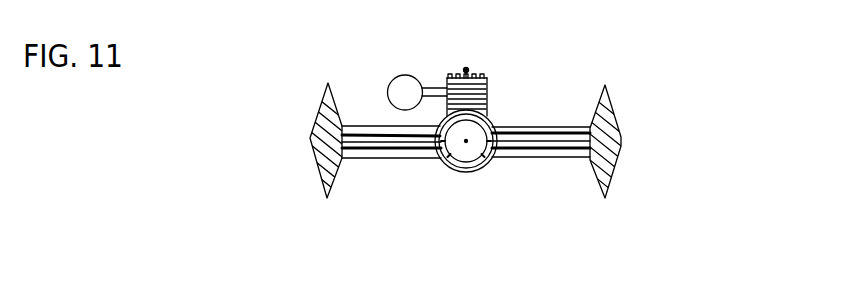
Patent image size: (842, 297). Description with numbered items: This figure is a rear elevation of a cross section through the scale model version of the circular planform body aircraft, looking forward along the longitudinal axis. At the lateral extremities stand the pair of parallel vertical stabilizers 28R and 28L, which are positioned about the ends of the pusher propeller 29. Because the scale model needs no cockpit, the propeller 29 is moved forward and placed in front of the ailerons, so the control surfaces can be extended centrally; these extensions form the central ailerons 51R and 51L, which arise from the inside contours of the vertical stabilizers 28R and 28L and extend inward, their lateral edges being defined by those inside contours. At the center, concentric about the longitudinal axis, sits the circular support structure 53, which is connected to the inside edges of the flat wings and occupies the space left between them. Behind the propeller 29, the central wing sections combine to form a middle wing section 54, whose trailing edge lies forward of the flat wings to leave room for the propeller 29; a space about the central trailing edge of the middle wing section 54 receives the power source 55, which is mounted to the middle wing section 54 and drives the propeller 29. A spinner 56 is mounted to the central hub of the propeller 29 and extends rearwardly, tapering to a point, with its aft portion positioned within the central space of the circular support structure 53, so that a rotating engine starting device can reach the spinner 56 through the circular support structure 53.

The vertical stabilizer 28L is at (312, 163).
The vertical stabilizer 28R is at (610, 103).
The pusher propeller 29 is at (397, 132).
The central aileron 51L is at (402, 143).
The central aileron 51R is at (548, 140).
The circular support structure 53 is at (477, 173).
The middle wing section 54 is at (380, 152).
The power source 55 is at (473, 75).
The spinner 56 is at (461, 151).